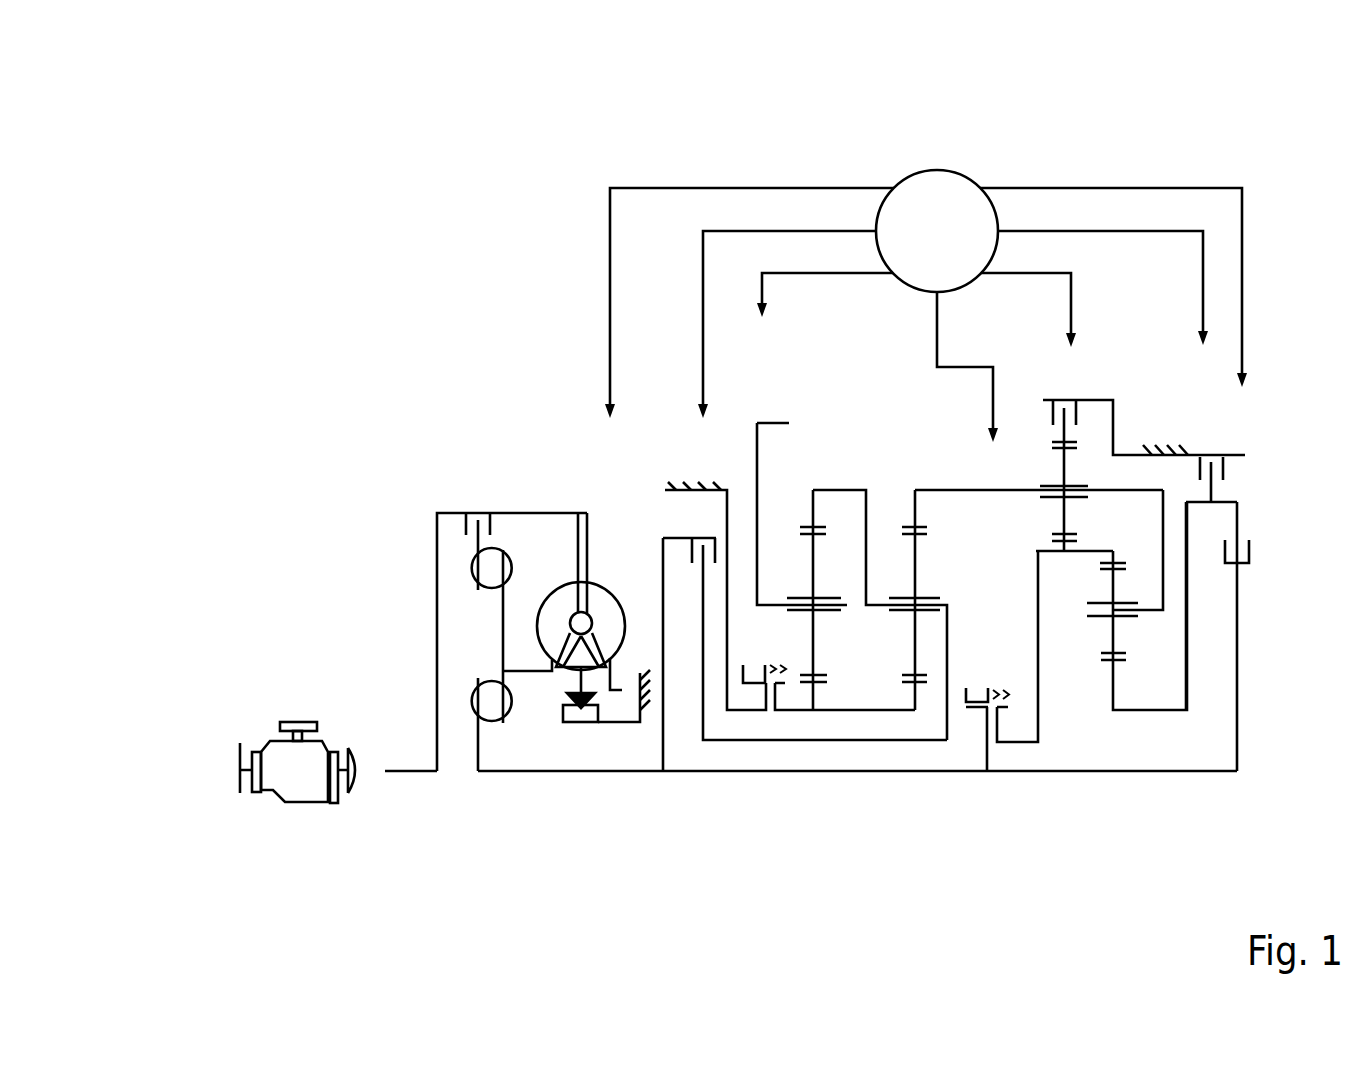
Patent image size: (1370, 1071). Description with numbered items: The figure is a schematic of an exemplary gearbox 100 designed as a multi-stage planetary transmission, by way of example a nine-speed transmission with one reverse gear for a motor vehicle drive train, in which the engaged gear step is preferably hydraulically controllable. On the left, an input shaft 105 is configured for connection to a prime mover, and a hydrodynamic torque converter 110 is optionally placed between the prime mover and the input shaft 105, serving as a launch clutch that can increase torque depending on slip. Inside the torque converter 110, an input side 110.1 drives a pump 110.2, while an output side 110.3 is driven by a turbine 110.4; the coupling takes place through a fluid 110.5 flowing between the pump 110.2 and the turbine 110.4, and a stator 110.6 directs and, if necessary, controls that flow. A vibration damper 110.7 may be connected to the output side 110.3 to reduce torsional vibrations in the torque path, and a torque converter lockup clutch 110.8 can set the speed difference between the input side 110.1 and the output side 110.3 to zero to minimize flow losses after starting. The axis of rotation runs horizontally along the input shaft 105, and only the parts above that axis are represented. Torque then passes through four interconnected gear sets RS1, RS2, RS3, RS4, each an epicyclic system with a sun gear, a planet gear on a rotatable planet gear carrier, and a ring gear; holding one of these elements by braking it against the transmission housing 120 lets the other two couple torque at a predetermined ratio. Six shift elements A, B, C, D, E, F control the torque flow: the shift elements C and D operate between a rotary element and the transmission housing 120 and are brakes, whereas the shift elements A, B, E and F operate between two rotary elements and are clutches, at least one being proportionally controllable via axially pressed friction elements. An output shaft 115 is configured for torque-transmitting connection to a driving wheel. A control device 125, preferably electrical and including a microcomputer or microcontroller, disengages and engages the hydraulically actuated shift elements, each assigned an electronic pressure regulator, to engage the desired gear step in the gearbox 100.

The gearbox 100 is at (340, 215).
The input shaft 105 is at (487, 773).
The hydrodynamic torque converter 110 is at (545, 448).
The input side 110.1 is at (500, 512).
The pump 110.2 is at (597, 597).
The output side 110.3 is at (538, 675).
The turbine 110.4 is at (552, 622).
The fluid 110.5 is at (600, 615).
The stator 110.6 is at (585, 660).
The vibration damper 110.7 is at (463, 573).
The torque converter lockup clutch 110.8 is at (463, 503).
The output shaft 115 is at (782, 423).
The transmission housing 120 is at (1165, 443).
The control device 125 is at (950, 210).
The first gear set RS1 is at (1113, 718).
The second gear set RS2 is at (1065, 560).
The third gear set RS3 is at (915, 717).
The fourth gear set RS4 is at (813, 717).
The shift element A is at (1039, 661).
The shift element B is at (1249, 545).
The shift element C is at (1211, 596).
The shift element D is at (1144, 410).
The shift element E is at (805, 637).
The shift element F is at (829, 670).